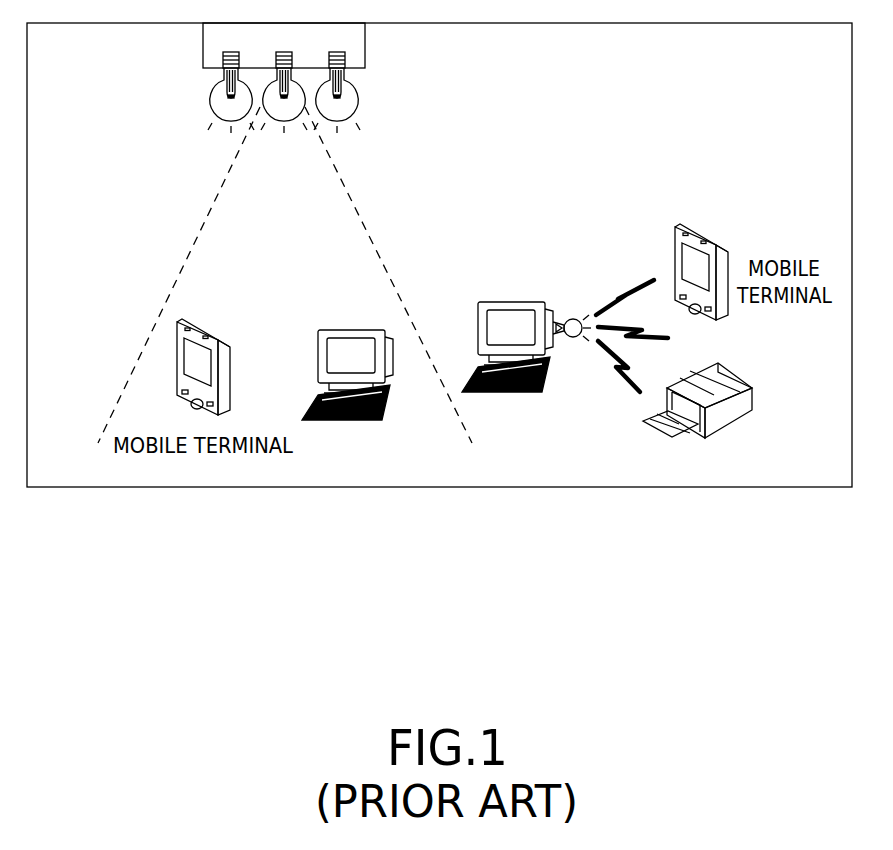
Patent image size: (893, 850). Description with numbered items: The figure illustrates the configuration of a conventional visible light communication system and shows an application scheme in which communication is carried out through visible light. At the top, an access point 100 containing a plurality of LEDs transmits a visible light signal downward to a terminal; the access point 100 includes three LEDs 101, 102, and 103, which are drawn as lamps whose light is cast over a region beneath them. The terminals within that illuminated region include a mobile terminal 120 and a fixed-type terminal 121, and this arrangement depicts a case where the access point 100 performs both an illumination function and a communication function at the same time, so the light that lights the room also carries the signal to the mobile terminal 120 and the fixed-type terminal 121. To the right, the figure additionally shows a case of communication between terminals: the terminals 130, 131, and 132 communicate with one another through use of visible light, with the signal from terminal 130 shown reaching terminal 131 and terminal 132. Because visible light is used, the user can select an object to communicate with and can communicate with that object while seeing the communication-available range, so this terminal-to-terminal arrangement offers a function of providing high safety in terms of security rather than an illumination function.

The access point 100 is at (365, 45).
The LED 101 is at (210, 100).
The LED 102 is at (284, 125).
The LED 103 is at (358, 100).
The mobile terminal 120 is at (207, 326).
The fixed-type terminal 121 is at (352, 328).
The terminal 130 is at (513, 302).
The terminal 131 is at (703, 230).
The terminal 132 is at (755, 395).